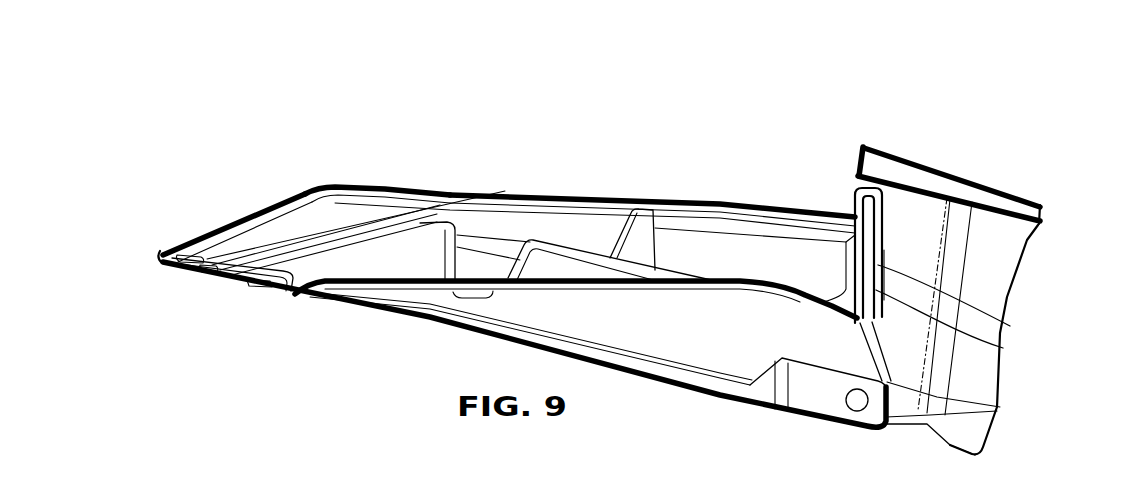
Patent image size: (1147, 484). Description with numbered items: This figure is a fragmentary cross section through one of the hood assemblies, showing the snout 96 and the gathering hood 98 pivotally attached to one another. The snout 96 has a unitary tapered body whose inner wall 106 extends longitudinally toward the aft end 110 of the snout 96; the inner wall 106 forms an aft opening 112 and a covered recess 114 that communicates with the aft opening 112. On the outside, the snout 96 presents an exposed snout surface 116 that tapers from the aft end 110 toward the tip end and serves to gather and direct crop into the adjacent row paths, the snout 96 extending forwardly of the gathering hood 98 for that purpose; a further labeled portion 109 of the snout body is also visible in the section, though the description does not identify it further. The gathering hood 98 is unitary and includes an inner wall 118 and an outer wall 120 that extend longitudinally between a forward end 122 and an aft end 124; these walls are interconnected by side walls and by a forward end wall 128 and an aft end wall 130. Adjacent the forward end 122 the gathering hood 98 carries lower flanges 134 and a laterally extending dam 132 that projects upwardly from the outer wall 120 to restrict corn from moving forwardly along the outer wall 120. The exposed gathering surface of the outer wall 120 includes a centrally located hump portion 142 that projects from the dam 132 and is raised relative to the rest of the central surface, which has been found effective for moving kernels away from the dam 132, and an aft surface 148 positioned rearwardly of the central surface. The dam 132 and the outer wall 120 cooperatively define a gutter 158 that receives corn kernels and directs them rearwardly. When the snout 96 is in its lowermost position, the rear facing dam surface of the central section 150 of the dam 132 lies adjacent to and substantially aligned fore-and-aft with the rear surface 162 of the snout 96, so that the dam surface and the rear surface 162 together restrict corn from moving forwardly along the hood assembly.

The aft end 110 is at (873, 68).
The snout 96 is at (936, 176).
The gathering hood 98 is at (683, 203).
The inner wall 106 is at (1013, 222).
The flange end 109 is at (1003, 183).
The aft opening 112 is at (852, 192).
The covered recess 114 is at (1003, 186).
The snout surface 116 is at (886, 146).
The inner wall 118 is at (404, 286).
The outer wall 120 is at (400, 192).
The forward end 122 is at (776, 429).
The aft end 124 is at (88, 273).
The forward end wall 128 is at (1007, 326).
The aft end wall 130 is at (158, 262).
The laterally extending dam 132 is at (884, 208).
The lower flanges 134 is at (862, 418).
The hump portion 142 is at (775, 210).
The aft surface 148 is at (263, 210).
The central section 150 is at (850, 197).
The gutter 158 is at (828, 210).
The rear surface 162 is at (858, 146).